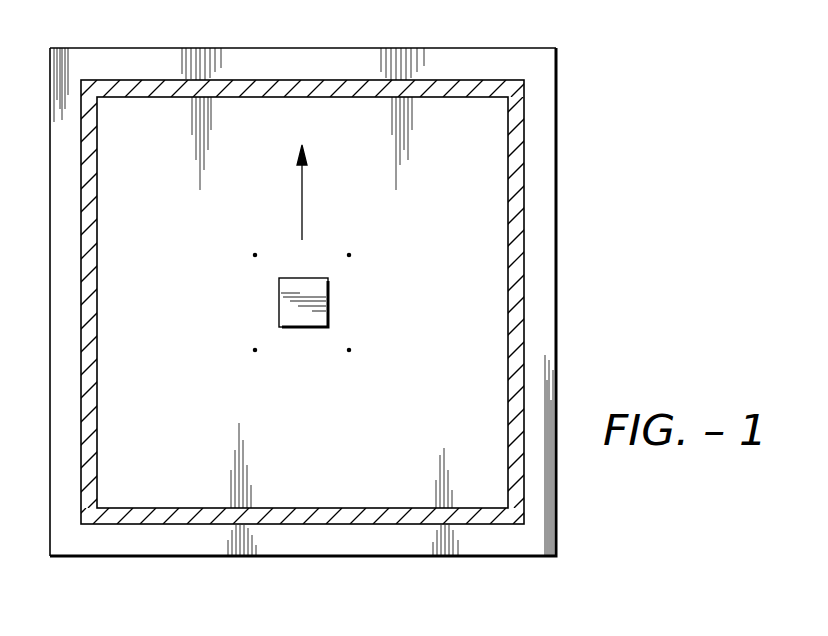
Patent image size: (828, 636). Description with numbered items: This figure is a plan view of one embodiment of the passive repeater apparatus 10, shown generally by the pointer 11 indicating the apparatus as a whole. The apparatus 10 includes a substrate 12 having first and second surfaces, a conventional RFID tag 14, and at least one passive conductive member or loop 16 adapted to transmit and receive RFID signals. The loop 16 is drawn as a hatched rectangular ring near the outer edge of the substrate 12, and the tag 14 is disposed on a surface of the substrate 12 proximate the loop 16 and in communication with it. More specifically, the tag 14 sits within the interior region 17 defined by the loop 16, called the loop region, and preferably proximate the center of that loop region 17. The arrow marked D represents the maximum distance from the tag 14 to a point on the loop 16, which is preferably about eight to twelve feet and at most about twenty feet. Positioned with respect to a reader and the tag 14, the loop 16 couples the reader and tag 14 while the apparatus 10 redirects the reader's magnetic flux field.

The passive repeater apparatus 10 is at (557, 48).
The semiconductor package assembly 11 is at (129, 37).
The substrate 12 is at (557, 91).
The RFID tag 14 is at (329, 303).
The passive conductive loop 16 is at (524, 164).
The loop region 17 is at (172, 196).